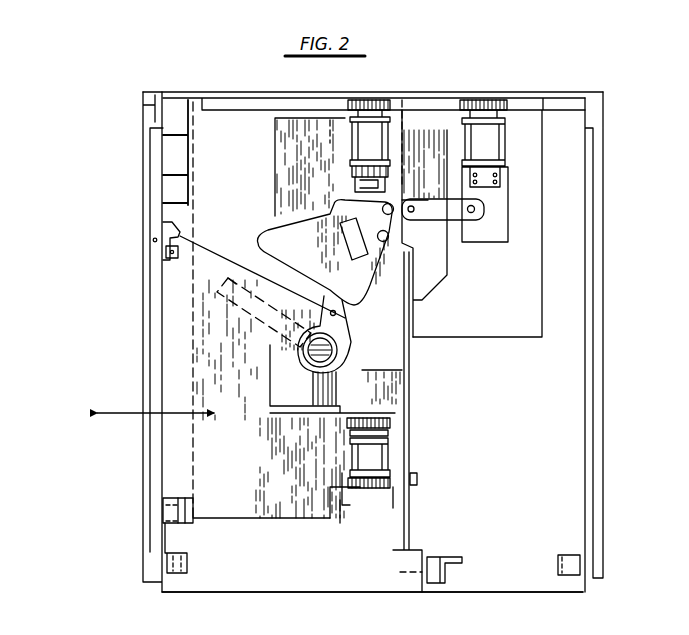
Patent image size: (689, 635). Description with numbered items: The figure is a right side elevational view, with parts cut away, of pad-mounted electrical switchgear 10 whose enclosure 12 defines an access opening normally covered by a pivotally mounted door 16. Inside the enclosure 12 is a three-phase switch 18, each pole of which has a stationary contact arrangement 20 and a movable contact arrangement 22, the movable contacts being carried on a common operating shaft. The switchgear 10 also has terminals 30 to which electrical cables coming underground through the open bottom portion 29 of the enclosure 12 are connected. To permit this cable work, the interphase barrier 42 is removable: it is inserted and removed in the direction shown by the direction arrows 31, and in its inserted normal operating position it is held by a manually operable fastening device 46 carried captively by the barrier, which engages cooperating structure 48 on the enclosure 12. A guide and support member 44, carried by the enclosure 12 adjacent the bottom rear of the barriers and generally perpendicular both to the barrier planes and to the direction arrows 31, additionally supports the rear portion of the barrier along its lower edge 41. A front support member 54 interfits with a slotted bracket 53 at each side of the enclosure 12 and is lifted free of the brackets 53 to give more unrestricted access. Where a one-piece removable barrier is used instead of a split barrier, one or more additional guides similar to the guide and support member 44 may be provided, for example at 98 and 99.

The electrical switchgear 10 is at (122, 120).
The enclosure 12 is at (535, 91).
The door 16 is at (141, 203).
The three-phase switch 18 is at (286, 212).
The stationary contact arrangement 20 is at (392, 200).
The movable contact arrangement 22 is at (352, 373).
The open bottom portion 29 is at (330, 578).
The terminals 30 is at (266, 377).
The direction arrows 31 is at (132, 415).
The lower edge 41 is at (330, 486).
The interphase barrier 42 is at (238, 519).
The guide and support member 44 is at (340, 505).
The fastening device 46 is at (165, 252).
The cooperating structure 48 is at (172, 260).
The slotted bracket 53 is at (170, 522).
The front support member 54 is at (176, 512).
The additional guide 98 is at (326, 126).
The additional guide 99 is at (400, 290).